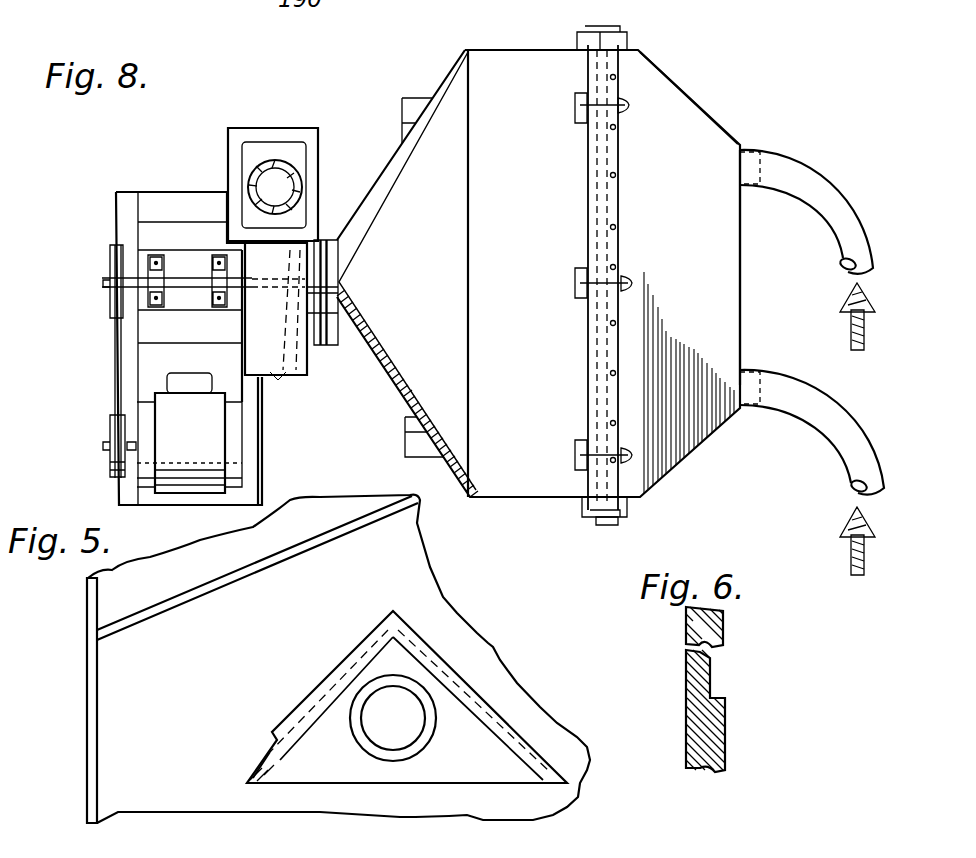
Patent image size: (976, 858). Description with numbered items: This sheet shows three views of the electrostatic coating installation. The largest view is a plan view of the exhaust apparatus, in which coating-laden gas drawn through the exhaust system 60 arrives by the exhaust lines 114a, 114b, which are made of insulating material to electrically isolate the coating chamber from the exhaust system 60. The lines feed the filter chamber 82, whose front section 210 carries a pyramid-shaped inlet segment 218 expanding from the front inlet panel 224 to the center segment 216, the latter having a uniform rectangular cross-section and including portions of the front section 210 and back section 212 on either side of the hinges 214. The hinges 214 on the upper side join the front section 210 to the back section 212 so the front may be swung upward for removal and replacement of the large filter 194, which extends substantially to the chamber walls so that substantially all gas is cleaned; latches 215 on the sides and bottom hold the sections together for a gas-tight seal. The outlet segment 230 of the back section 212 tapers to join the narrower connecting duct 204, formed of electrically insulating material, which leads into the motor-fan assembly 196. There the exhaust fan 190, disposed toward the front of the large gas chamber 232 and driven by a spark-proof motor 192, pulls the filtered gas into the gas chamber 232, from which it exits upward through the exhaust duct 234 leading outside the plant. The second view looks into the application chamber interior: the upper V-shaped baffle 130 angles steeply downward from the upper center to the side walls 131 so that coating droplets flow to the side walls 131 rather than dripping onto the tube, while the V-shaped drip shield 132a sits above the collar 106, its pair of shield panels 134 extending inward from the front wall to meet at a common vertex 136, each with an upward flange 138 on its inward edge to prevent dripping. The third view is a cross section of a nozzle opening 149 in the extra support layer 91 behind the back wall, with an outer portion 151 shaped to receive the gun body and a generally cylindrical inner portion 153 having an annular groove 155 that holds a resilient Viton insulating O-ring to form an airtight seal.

In FIG. 8, the hopper 82 is at (519, 44).
In FIG. 8, the outlet segment 230 is at (430, 288).
In FIG. 8, the front section 210 is at (700, 102).
In FIG. 8, the inlet segment 218 is at (705, 123).
In FIG. 8, the back section 212 is at (530, 490).
In FIG. 8, the filter 194 is at (605, 328).
In FIG. 8, the hinges 214 is at (578, 118).
In FIG. 8, the center segment 216 is at (565, 45).
In FIG. 8, the latches 215 is at (608, 505).
In FIG. 8, the exhaust line 114a is at (818, 148).
In FIG. 8, the front inlet panel 224 is at (740, 240).
In FIG. 8, the exhaust line 114b is at (775, 372).
In FIG. 8, the exhaust system 60 is at (336, 185).
In FIG. 8, the motor-fan assembly 196 is at (161, 185).
In FIG. 8, the exhaust duct 234 is at (258, 140).
In FIG. 8, the exhaust fan 190 is at (292, 372).
In FIG. 8, the connecting duct 204 is at (332, 340).
In FIG. 8, the gas chamber 232 is at (295, 377).
In FIG. 8, the motor 192 is at (210, 451).
In FIG. 5, the drip shield 132a is at (460, 640).
In FIG. 5, the side walls 131 is at (97, 692).
In FIG. 5, the upper V-shaped baffle 130 is at (260, 575).
In FIG. 5, the common vertex 136 is at (405, 605).
In FIG. 5, the flange 138 is at (330, 680).
In FIG. 5, the shield panels 134 is at (270, 768).
In FIG. 5, the collar 106 is at (430, 725).
In FIG. 6, the annular groove 155 is at (728, 628).
In FIG. 6, the inner portion 153 is at (688, 650).
In FIG. 6, the nozzle openings 149 is at (744, 655).
In FIG. 6, the outer portion 151 is at (727, 686).
In FIG. 6, the extra support layer 91 is at (727, 725).